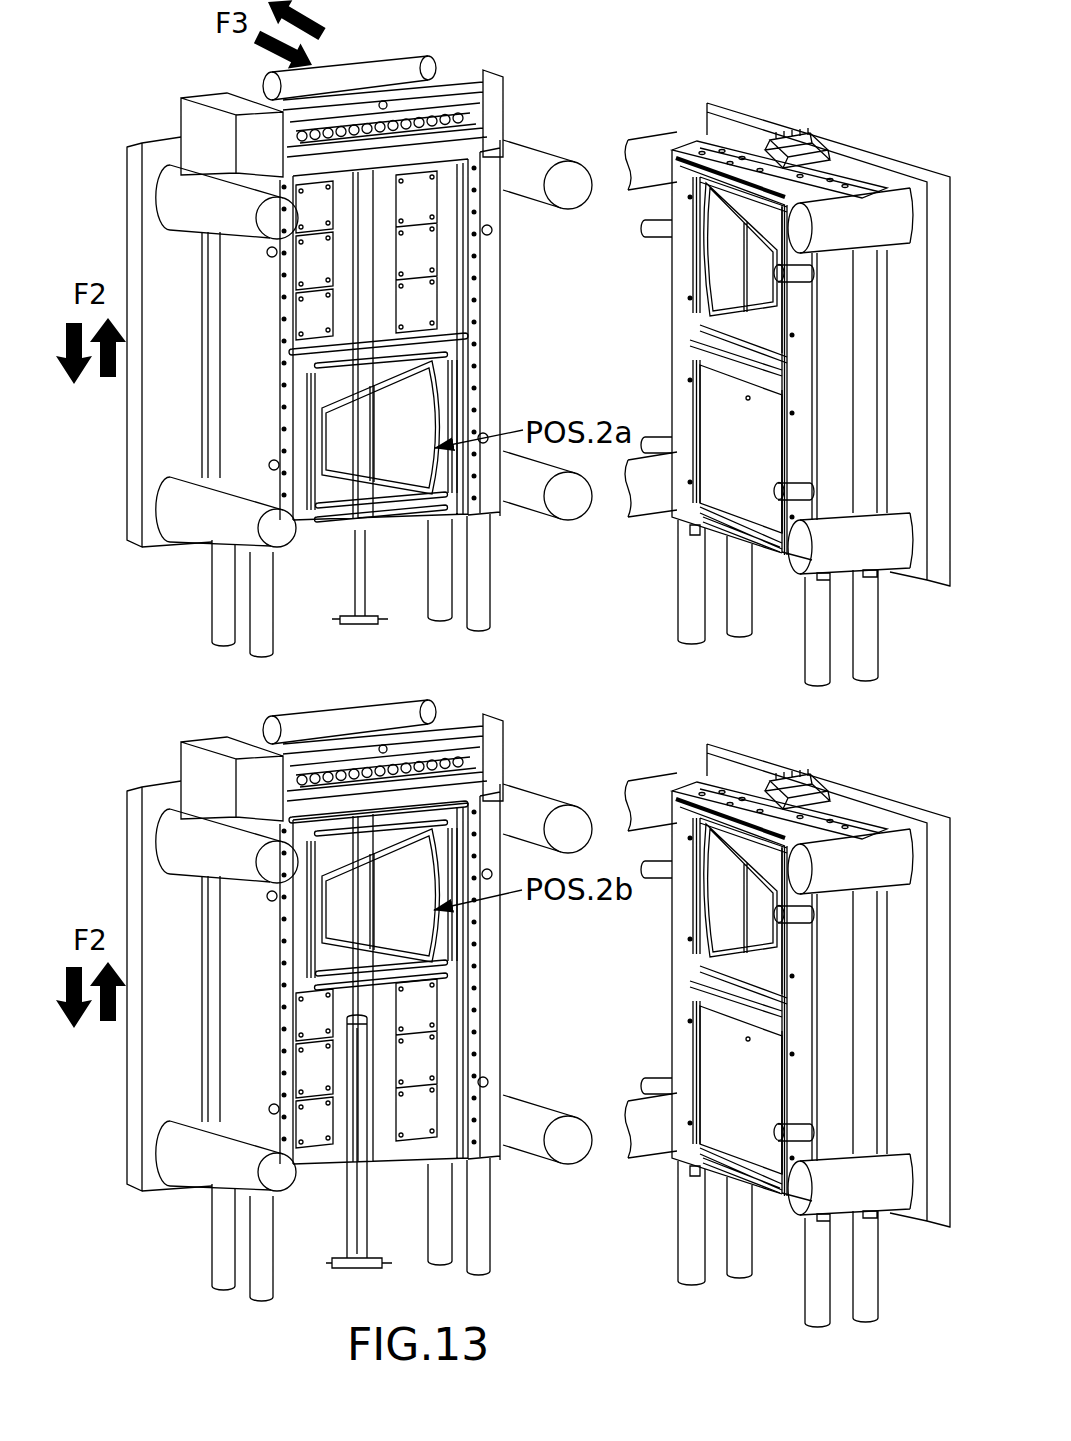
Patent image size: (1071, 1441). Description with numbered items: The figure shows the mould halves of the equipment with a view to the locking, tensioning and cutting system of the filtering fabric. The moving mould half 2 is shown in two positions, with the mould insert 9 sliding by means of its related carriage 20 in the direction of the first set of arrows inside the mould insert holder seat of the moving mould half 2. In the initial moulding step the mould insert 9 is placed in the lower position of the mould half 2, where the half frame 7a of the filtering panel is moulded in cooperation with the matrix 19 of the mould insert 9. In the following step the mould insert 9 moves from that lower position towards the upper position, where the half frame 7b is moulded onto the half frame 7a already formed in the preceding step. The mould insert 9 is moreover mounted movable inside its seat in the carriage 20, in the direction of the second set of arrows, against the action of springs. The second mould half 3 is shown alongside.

The moving mould half 2 is at (158, 1246).
The second processing station 3 is at (641, 1252).
The half frame 7a is at (434, 382).
The half frame 7b is at (708, 188).
The mould insert 9 is at (395, 426).
The matrix 19 is at (435, 427).
The carriage 20 is at (415, 302).